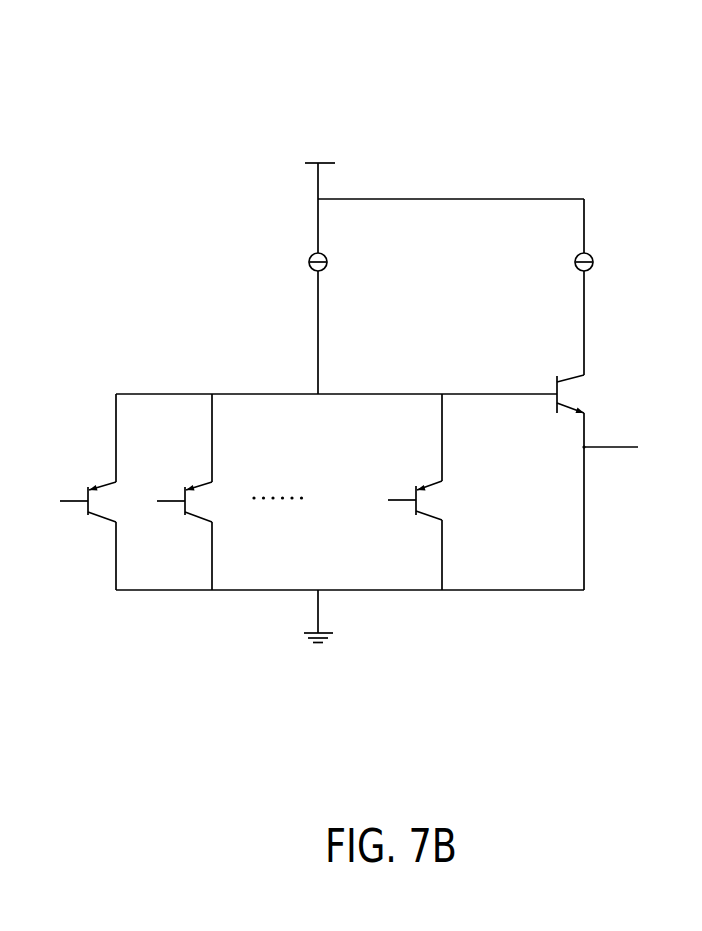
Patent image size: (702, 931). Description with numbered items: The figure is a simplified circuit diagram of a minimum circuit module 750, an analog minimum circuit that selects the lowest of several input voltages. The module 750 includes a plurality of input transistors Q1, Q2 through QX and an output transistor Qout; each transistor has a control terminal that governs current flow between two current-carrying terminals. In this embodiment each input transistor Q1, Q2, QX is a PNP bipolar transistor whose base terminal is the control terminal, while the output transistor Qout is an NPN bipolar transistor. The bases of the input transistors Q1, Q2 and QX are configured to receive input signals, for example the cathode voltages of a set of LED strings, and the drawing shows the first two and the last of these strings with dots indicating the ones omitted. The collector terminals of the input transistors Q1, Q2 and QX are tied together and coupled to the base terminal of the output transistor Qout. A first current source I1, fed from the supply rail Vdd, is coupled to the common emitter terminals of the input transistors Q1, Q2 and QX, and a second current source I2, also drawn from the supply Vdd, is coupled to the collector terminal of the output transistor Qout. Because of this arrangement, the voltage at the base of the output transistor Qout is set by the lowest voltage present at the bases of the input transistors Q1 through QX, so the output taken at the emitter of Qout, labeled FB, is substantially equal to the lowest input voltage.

The minimum circuit module 750 is at (349, 355).
The supply voltage Vdd is at (440, 182).
The first current source I1 is at (303, 321).
The second current source I2 is at (569, 287).
The output transistor Qout is at (544, 482).
The FB signal FB is at (614, 430).
The input transistor Q1 is at (69, 492).
The input transistor Q2 is at (169, 492).
The input transistor QX is at (397, 492).